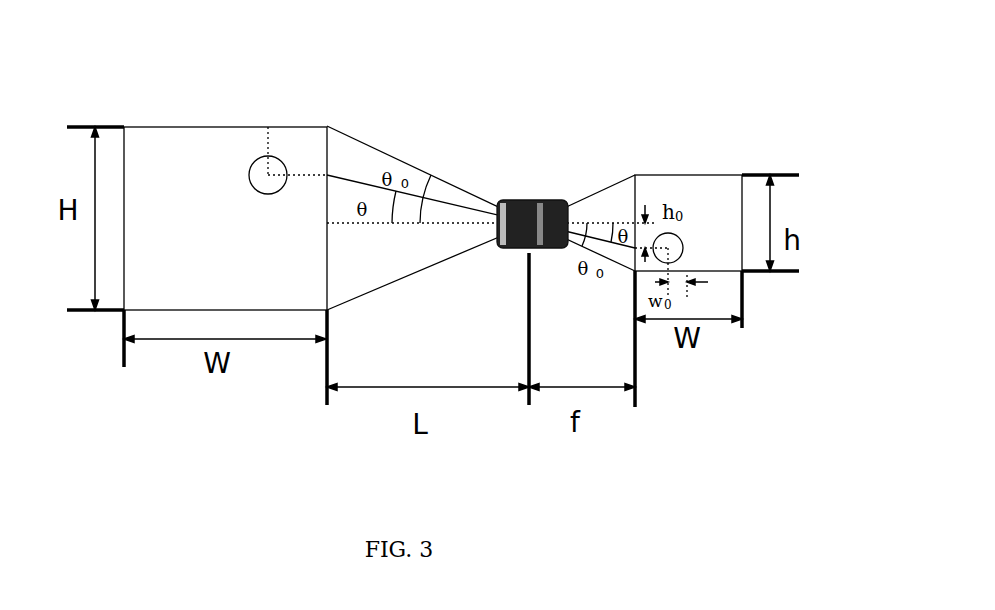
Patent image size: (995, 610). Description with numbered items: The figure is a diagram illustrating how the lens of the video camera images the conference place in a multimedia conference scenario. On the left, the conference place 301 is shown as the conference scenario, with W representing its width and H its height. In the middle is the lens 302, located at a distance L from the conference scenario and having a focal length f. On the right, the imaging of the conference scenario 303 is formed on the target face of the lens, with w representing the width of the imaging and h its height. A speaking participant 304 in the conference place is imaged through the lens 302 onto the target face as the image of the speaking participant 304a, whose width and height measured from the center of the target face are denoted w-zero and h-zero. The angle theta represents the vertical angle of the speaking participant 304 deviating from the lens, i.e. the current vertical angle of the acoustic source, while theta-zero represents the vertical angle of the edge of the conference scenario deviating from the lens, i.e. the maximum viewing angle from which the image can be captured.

The conference place 301 is at (225, 126).
The lens 302 is at (545, 202).
The imaging of the conference scenario 303 is at (733, 183).
The speaking participant 304 is at (282, 157).
The image of the speaking participant 304a is at (684, 247).